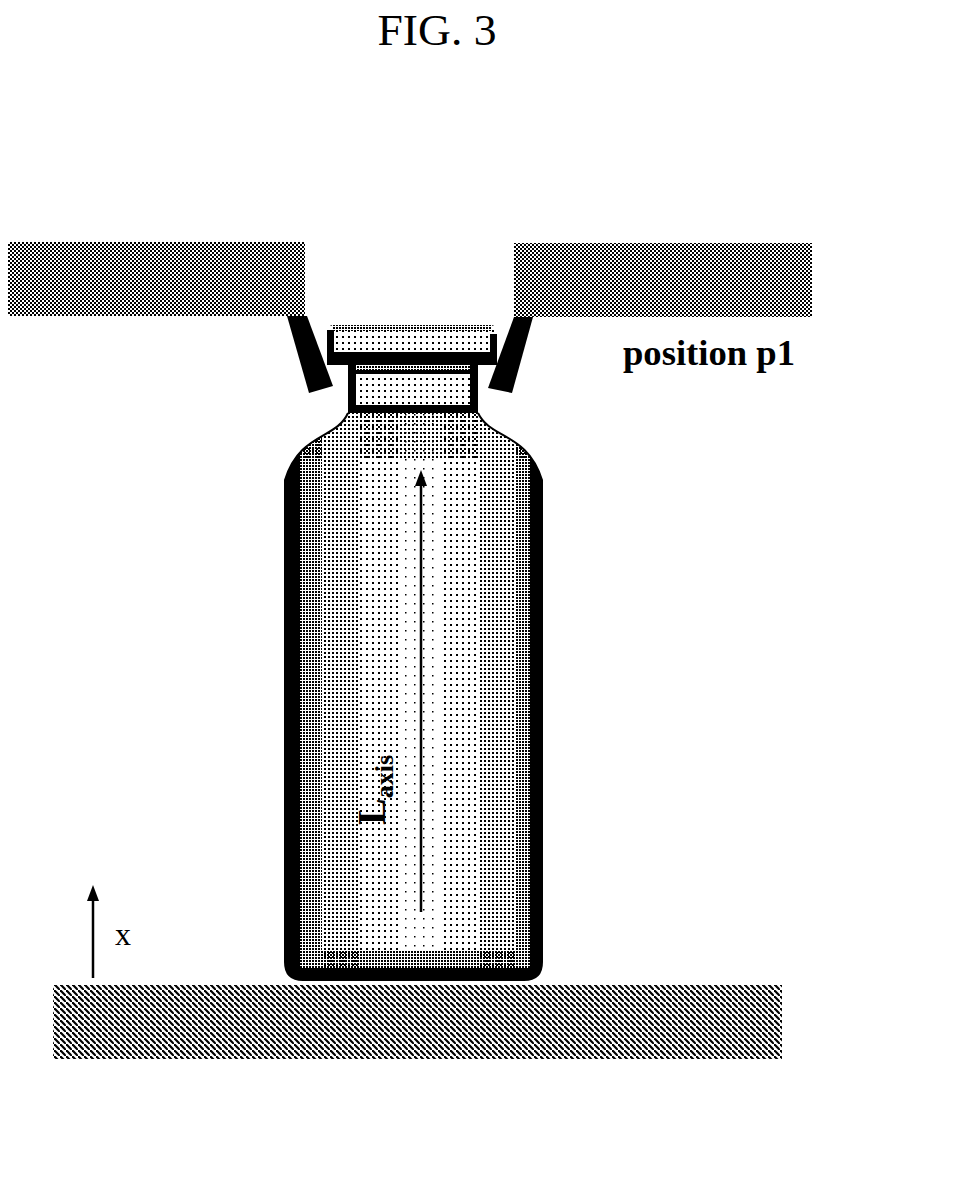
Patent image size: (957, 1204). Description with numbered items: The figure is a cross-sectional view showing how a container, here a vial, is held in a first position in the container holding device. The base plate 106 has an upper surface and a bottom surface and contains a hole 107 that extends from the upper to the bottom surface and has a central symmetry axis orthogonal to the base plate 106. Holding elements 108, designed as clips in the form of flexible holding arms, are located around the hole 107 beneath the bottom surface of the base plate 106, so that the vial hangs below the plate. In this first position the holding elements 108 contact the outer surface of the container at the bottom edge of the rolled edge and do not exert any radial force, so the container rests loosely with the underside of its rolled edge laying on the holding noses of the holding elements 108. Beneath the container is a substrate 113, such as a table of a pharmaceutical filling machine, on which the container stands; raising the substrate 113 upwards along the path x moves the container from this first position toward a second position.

The base plate 106 is at (703, 233).
The hole 107 is at (333, 263).
The holding elements 108 is at (530, 350).
The substrate 113 is at (600, 1003).